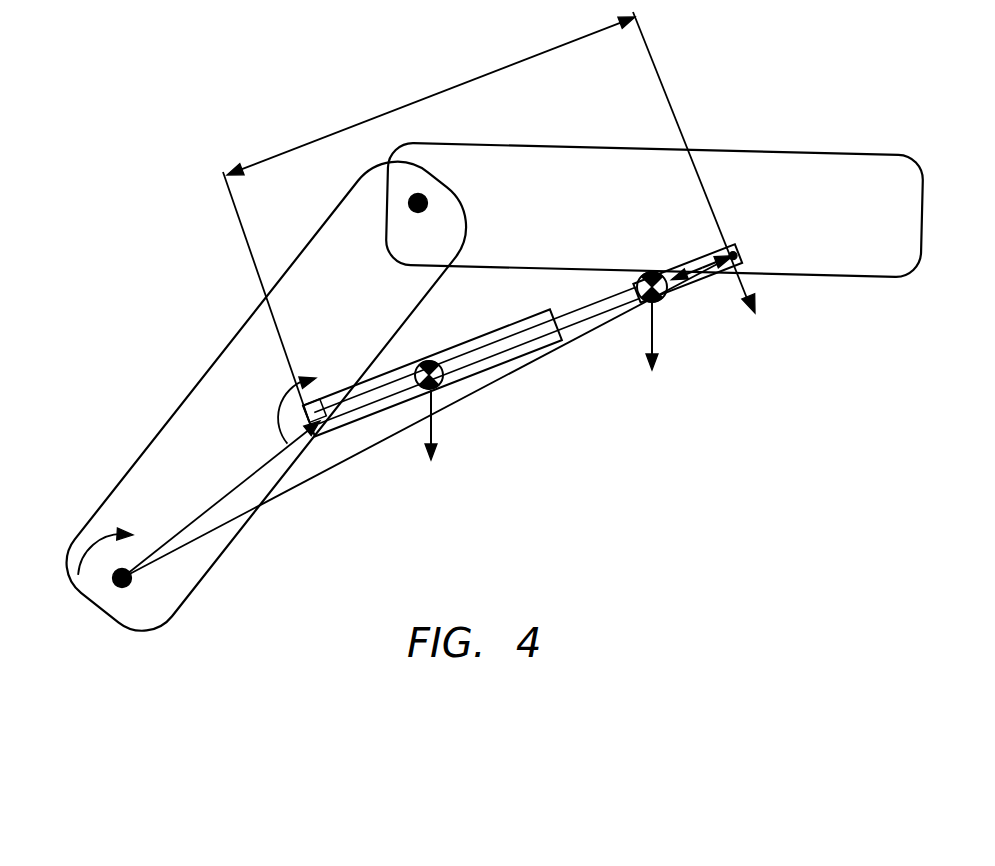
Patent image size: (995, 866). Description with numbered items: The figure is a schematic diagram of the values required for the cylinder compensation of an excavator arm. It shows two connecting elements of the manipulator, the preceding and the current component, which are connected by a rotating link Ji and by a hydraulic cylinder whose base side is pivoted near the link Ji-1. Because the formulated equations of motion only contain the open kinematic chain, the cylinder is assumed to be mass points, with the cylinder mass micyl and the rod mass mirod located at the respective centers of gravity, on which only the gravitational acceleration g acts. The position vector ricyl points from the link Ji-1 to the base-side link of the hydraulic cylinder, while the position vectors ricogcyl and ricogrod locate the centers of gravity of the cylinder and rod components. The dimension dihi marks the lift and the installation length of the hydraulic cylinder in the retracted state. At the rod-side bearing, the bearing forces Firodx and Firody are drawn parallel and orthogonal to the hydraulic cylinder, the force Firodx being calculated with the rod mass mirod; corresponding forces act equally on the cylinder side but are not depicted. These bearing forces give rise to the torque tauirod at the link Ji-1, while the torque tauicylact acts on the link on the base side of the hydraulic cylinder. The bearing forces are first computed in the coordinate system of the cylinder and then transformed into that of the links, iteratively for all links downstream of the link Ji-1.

The link J_i Ji is at (414, 223).
The link J_{i-1} Ji-1 is at (137, 594).
The mass of the cylinder component m_{i,cyl} micyl is at (423, 362).
The mass of the rod component m_{i,rod} mirod is at (672, 264).
The position vector r_{i,cyl} ricyl is at (427, 417).
The position vector to the cylinder center of gravity r_{i,cog,cyl} ricogcyl is at (362, 405).
The position vector to the rod center of gravity r_{i,cog,rod} ricogrod is at (592, 316).
The bearing force F_{i,rod,x} Firodx is at (699, 262).
The bearing force F_{i,rod,y} Firody is at (736, 165).
The lift and installation length d_i + h_i dihi is at (429, 219).
The gravitational acceleration g is at (531, 389).
The torque τ_{i,rod} tauirod is at (69, 552).
The torque τ_{i,cyl,act} tauicylact is at (261, 408).